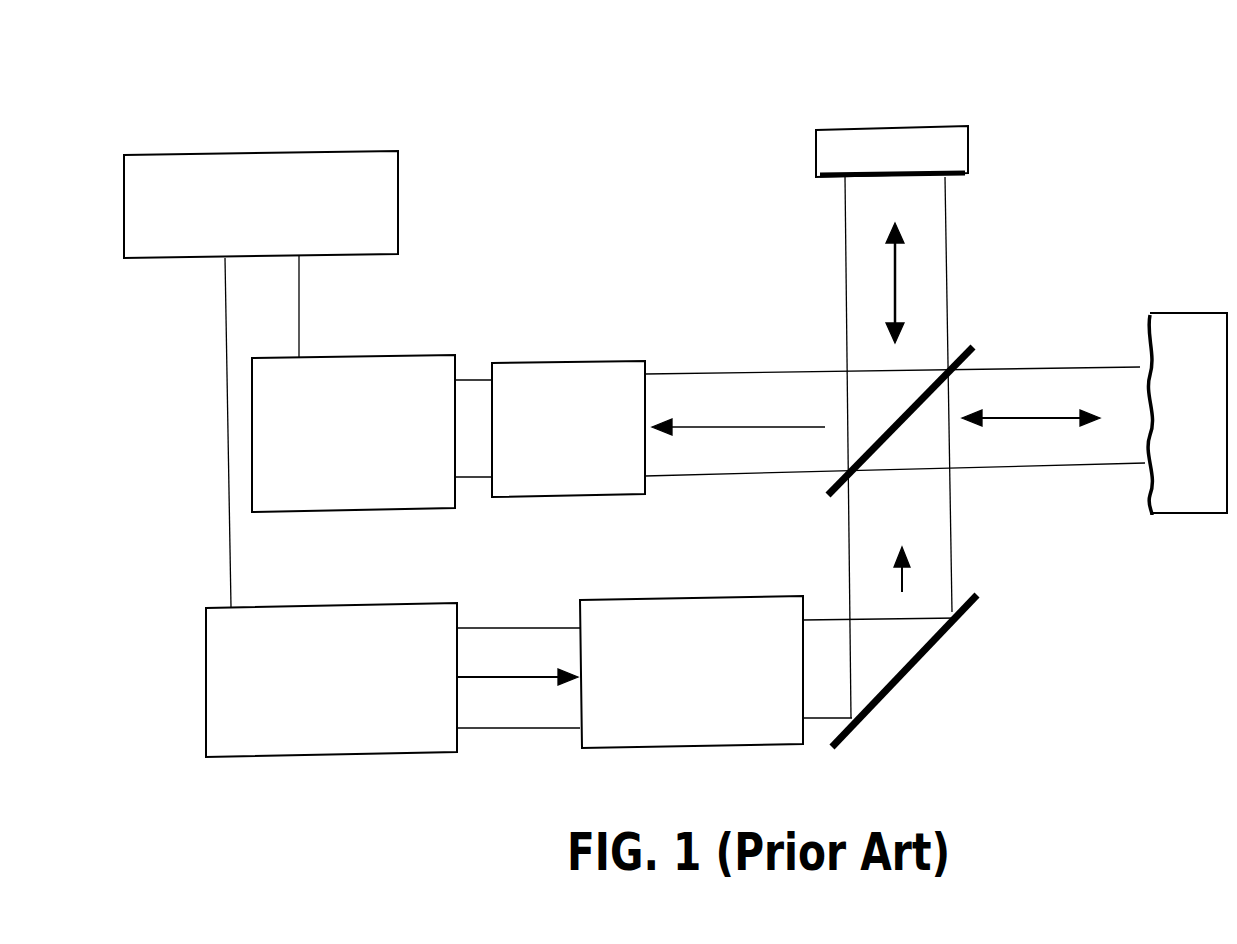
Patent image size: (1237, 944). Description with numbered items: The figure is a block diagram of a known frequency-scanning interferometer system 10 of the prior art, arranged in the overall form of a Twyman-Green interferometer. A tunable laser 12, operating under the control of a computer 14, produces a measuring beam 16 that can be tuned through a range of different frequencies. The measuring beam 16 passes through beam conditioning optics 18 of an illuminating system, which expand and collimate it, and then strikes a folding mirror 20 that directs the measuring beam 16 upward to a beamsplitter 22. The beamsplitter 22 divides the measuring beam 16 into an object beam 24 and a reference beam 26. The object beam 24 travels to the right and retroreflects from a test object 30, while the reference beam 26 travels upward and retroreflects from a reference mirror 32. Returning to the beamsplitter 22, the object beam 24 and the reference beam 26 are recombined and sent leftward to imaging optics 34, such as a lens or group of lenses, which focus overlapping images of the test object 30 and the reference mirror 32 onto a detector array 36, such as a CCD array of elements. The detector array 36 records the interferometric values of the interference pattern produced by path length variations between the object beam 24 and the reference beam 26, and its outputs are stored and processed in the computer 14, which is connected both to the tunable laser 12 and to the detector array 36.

The frequency-scanning interferometer system 10 is at (352, 103).
The tunable laser 12 is at (342, 693).
The computer 14 is at (281, 220).
The measuring beam 16 is at (497, 678).
The beam conditioning optics 18 is at (694, 690).
The folding mirror 20 is at (892, 687).
The beamsplitter 22 is at (962, 347).
The object beam 24 is at (1045, 420).
The reference beam 26 is at (893, 297).
The test object 30 is at (1145, 348).
The reference mirror 32 is at (932, 177).
The imaging optics 34 is at (580, 440).
The detector array 36 is at (368, 455).